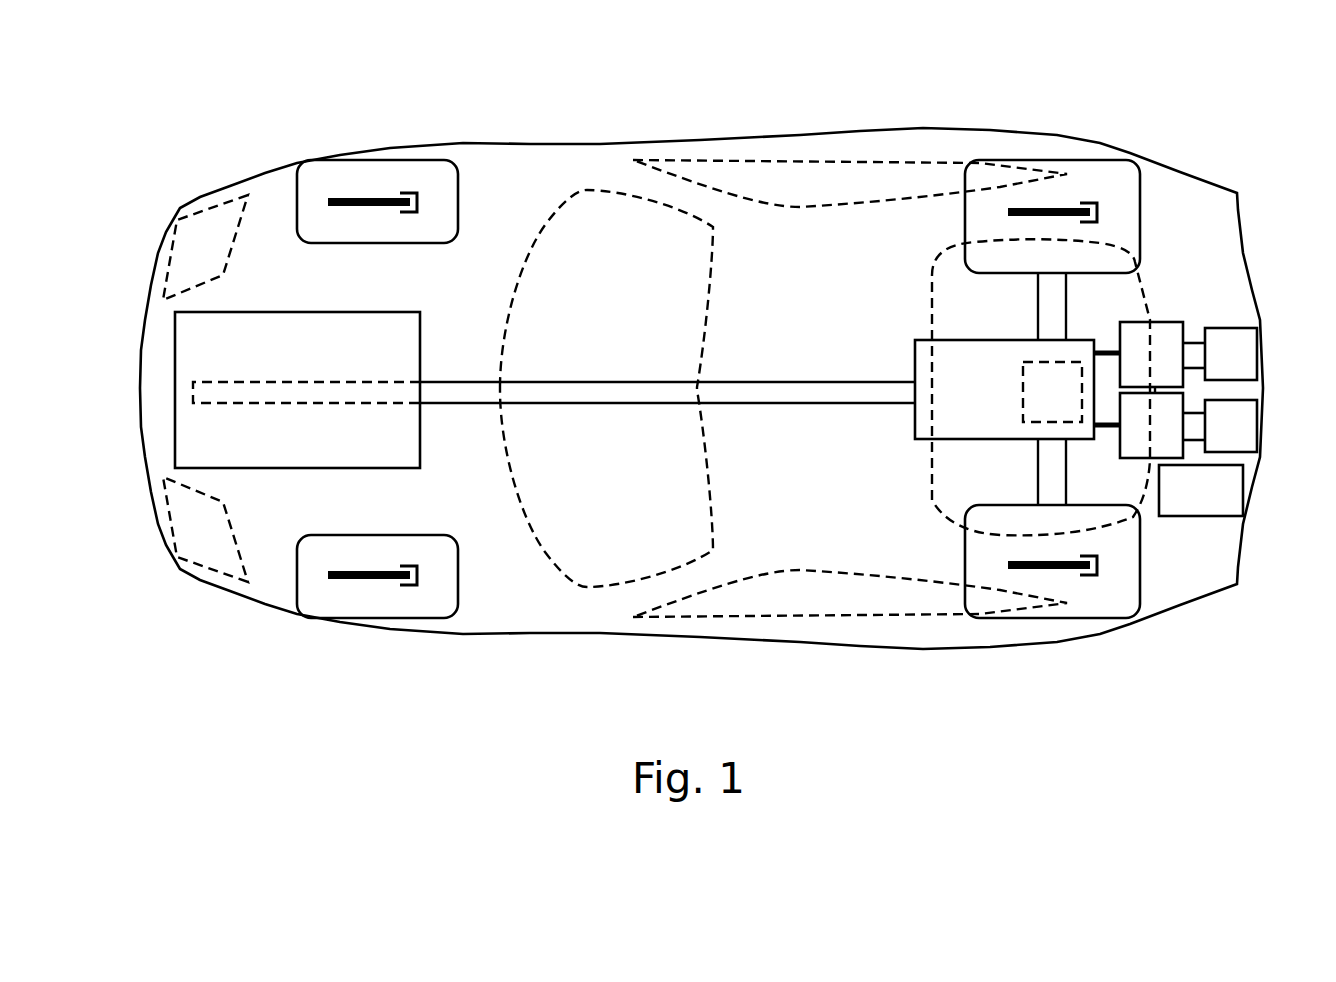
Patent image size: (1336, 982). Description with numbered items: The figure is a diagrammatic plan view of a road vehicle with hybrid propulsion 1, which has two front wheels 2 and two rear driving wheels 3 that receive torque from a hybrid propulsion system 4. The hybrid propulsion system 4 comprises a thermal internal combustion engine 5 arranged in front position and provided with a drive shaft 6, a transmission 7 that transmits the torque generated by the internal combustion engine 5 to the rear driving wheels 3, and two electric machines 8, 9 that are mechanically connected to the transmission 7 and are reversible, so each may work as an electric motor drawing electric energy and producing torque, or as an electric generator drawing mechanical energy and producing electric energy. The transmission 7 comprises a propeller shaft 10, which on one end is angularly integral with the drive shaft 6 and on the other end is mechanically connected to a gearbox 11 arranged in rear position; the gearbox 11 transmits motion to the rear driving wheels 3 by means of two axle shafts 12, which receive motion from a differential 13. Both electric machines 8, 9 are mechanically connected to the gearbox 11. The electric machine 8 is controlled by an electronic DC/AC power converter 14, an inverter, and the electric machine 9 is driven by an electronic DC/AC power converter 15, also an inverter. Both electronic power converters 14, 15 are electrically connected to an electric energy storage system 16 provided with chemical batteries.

The road vehicle with hybrid propulsion 1 is at (1225, 804).
The front wheels 2 is at (317, 177).
The rear driving wheels 3 is at (1125, 173).
The hybrid propulsion system 4 is at (220, 168).
The thermal internal combustion engine 5 is at (182, 333).
The drive shaft 6 is at (285, 388).
The transmission 7 is at (733, 123).
The electric machine 8 is at (1138, 425).
The electric machine 9 is at (1138, 357).
The propeller shaft 10 is at (753, 395).
The gearbox 11 is at (1032, 387).
The axle shafts 12 is at (1048, 300).
The differential 13 is at (1052, 392).
The electronic DC/AC power converter 14 is at (1220, 426).
The electronic DC/AC power converter 15 is at (1220, 354).
The electric energy storage system 16 is at (1201, 490).